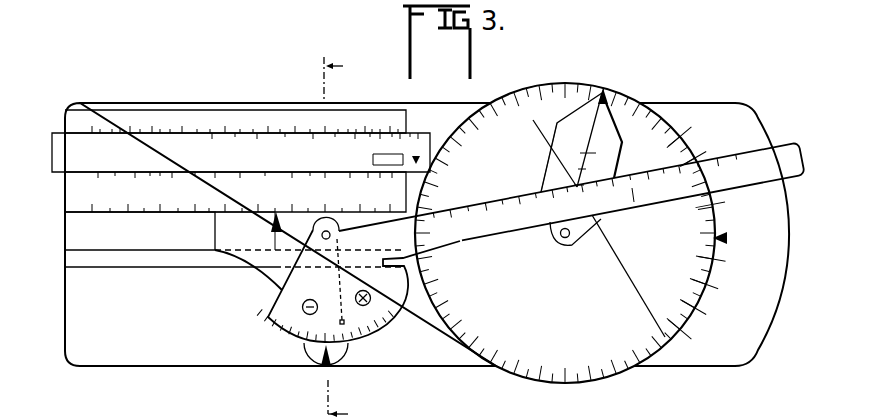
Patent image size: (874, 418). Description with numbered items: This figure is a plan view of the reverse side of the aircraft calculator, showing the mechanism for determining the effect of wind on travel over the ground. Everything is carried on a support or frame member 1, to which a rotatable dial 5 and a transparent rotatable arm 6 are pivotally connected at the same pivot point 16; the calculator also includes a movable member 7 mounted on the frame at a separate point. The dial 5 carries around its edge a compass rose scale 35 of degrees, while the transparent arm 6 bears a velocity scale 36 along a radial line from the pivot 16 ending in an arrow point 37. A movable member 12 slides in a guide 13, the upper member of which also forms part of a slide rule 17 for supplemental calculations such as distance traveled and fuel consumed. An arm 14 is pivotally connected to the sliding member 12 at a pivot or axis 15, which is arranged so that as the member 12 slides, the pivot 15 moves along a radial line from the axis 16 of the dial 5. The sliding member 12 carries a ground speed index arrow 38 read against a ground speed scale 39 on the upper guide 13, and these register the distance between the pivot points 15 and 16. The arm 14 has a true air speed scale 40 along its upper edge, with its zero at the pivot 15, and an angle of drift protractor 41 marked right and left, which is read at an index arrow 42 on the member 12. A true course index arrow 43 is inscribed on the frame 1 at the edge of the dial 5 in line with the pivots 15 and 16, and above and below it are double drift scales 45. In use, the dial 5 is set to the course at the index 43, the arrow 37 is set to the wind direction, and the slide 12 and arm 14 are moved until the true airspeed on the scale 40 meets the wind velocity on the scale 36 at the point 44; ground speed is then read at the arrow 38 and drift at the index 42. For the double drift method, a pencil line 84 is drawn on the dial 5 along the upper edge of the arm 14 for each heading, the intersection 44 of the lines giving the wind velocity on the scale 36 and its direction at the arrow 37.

The support or frame member 1 is at (763, 124).
The rotatable dial 5 is at (509, 93).
The transparent rotatable arm 6 is at (548, 172).
The movable member 7 is at (326, 237).
The movable member 12 is at (250, 270).
The guide 13 is at (82, 260).
The arm 14 is at (457, 246).
The pivot or axis 15 is at (339, 228).
The pivot point 16 is at (561, 242).
The slide rule 17 is at (106, 138).
The compass rose scale 35 is at (510, 366).
The velocity scale 36 is at (620, 158).
The arrow point 37 is at (608, 94).
The ground speed index arrow 38 is at (282, 217).
The ground speed scale 39 is at (205, 212).
The true air speed scale 40 is at (634, 202).
The angle of drift protractor 41 is at (381, 323).
The index arrow 42 is at (345, 360).
The true course index arrow 43 is at (750, 254).
The intersection point 44 is at (598, 232).
The double drift scales 45 is at (700, 127).
The pencil line 84 is at (626, 272).